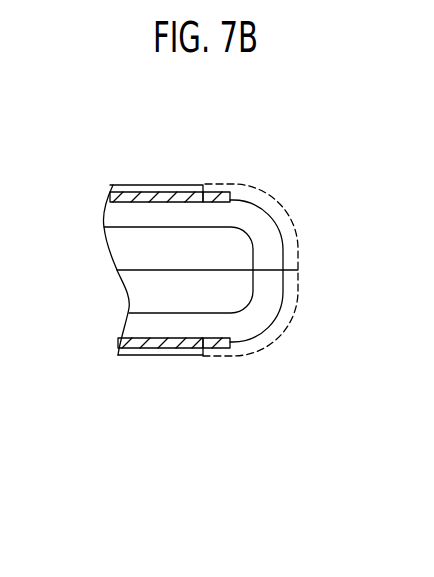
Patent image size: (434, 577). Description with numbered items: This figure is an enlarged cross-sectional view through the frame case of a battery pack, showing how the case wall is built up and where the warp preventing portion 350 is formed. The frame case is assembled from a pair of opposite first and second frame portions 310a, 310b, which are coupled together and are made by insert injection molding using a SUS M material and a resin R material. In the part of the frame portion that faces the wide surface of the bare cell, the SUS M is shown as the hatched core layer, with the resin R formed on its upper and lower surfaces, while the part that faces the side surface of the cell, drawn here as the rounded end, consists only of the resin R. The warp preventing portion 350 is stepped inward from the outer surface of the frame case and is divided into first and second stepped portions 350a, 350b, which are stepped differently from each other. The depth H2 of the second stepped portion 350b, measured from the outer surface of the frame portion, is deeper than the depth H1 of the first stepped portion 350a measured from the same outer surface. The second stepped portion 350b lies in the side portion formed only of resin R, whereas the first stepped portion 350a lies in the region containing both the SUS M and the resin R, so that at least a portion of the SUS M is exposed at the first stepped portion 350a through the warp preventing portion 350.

The SUS M material M is at (128, 198).
The resin R material R is at (195, 213).
The first frame portion 310a is at (118, 358).
The second frame portion 310b is at (212, 170).
The first stepped portion 350a is at (198, 349).
The second stepped portion 350b is at (253, 345).
The warp preventing portion 350 is at (308, 458).
The depth of the first stepped portion H1 is at (215, 318).
The depth of the second stepped portion H2 is at (247, 308).